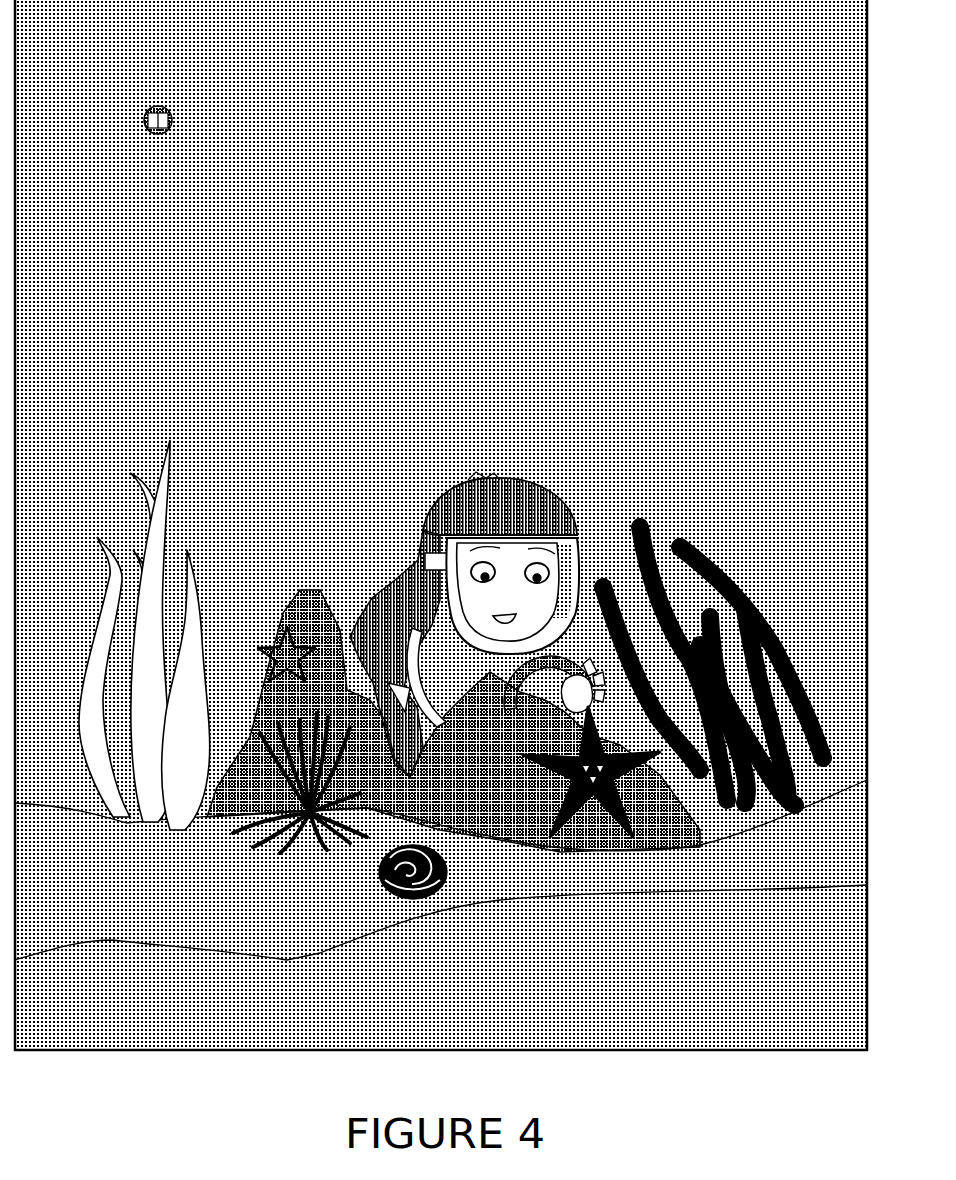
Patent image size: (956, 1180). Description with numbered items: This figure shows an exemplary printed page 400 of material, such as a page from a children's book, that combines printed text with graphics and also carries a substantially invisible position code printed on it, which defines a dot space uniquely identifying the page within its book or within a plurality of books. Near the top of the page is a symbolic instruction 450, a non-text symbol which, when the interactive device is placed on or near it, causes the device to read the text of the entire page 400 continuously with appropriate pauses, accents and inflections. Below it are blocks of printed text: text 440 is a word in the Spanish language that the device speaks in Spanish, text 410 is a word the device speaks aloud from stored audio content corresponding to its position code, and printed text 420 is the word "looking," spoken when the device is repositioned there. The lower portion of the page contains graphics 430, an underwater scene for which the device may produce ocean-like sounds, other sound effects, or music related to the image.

The printed page 400 is at (134, 50).
The text 410 is at (570, 276).
The printed text 420 is at (255, 336).
The graphics 430 is at (608, 545).
The text 440 is at (275, 145).
The symbolic instruction 450 is at (146, 109).